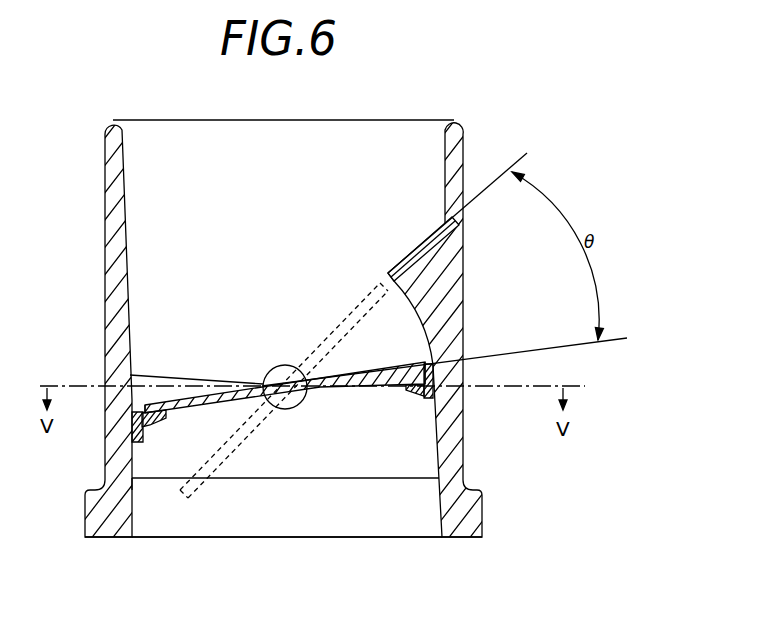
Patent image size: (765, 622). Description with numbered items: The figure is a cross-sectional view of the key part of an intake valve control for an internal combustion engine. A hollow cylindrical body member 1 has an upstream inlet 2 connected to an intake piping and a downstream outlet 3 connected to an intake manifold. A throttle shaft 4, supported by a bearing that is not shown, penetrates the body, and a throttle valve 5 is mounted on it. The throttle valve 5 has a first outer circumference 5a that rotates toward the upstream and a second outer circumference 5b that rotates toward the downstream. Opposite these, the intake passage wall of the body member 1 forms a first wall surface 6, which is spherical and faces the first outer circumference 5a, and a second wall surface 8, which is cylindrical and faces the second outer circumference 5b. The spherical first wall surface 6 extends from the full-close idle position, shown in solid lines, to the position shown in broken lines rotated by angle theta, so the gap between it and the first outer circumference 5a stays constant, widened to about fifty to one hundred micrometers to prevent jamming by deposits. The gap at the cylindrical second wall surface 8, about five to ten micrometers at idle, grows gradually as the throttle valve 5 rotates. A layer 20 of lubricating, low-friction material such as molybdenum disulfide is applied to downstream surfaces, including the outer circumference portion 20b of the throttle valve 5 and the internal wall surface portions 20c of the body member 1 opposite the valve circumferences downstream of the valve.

The hollow cylindrical body member 1 is at (110, 242).
The upstream inlet 2 is at (350, 119).
The downstream outlet 3 is at (330, 538).
The throttle shaft 4 is at (283, 364).
The throttle valve 5 is at (226, 383).
The first outer circumference 5a is at (425, 362).
The second outer circumference 5b is at (170, 403).
The first wall surface 6 is at (398, 322).
The second wall surface 8 is at (135, 465).
The layer 20 is at (134, 446).
The outer circumference portion 20b is at (152, 424).
The internal wall surface portions 20c is at (131, 440).